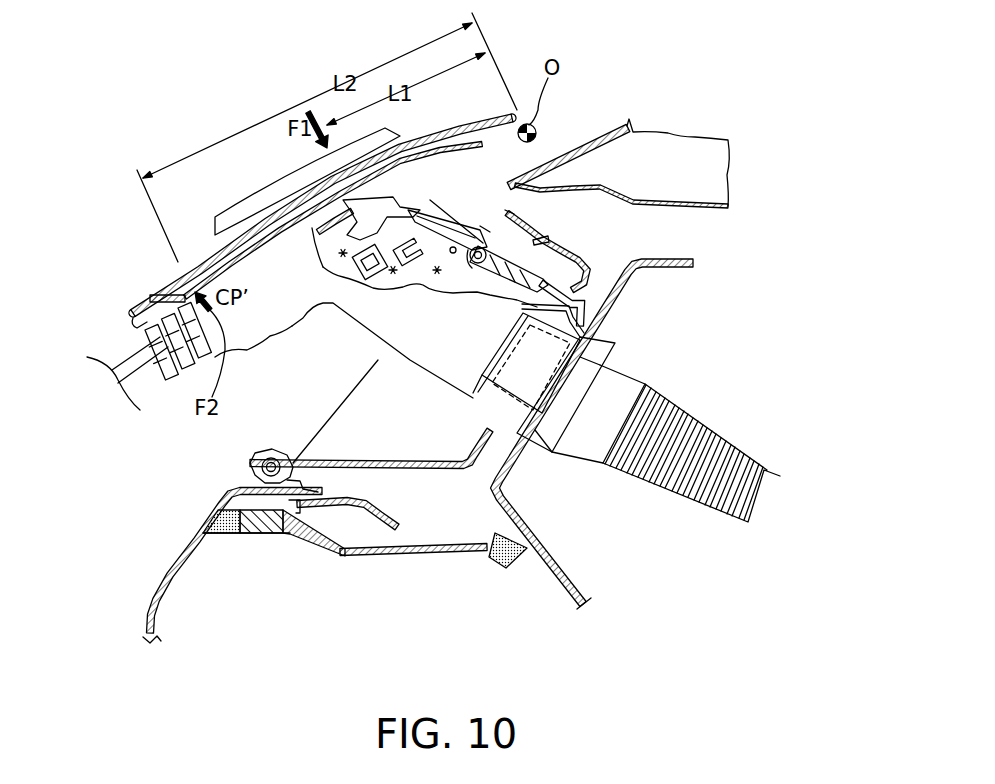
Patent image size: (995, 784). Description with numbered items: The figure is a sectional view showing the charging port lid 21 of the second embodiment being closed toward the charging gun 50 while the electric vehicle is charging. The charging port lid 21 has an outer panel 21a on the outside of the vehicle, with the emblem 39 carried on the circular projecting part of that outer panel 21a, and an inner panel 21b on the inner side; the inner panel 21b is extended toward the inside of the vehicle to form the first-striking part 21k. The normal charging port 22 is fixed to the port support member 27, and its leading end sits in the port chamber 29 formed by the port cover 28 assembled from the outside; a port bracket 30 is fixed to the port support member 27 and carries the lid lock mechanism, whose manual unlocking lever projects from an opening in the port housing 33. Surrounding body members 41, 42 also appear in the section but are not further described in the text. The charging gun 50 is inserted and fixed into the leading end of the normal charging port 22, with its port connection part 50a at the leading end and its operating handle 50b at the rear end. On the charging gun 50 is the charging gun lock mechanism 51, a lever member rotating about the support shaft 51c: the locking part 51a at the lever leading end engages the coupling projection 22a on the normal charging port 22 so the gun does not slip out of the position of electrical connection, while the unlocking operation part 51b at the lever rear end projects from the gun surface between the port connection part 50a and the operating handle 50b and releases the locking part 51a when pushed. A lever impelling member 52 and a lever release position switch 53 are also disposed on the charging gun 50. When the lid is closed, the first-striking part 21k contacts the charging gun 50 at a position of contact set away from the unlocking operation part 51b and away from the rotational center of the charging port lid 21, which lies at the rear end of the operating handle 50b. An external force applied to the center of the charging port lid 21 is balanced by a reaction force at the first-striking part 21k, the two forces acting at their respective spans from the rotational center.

The charging port lid 21 is at (192, 237).
The outer panel 21a is at (440, 142).
The inner panel 21b is at (448, 158).
The first-striking part 21k is at (180, 299).
The normal charging port 22 is at (577, 386).
The coupling projection 22a is at (537, 320).
The port support member 27 is at (560, 570).
The port cover 28 is at (555, 270).
The port chamber 29 is at (565, 262).
The port bracket 30 is at (358, 517).
The port housing 33 is at (272, 533).
The emblem 39 is at (248, 194).
The outer panel 41 is at (607, 128).
The side panel 42 is at (157, 593).
The charging gun 50 is at (360, 327).
The port connection part 50a is at (512, 375).
The operating handle 50b is at (263, 307).
The charging gun lock mechanism 51 is at (453, 247).
The locking part 51a is at (560, 307).
The unlocking operation part 51b is at (385, 218).
The support shaft 51c is at (485, 230).
The lever impelling member 52 is at (403, 272).
The lever release position switch 53 is at (340, 263).